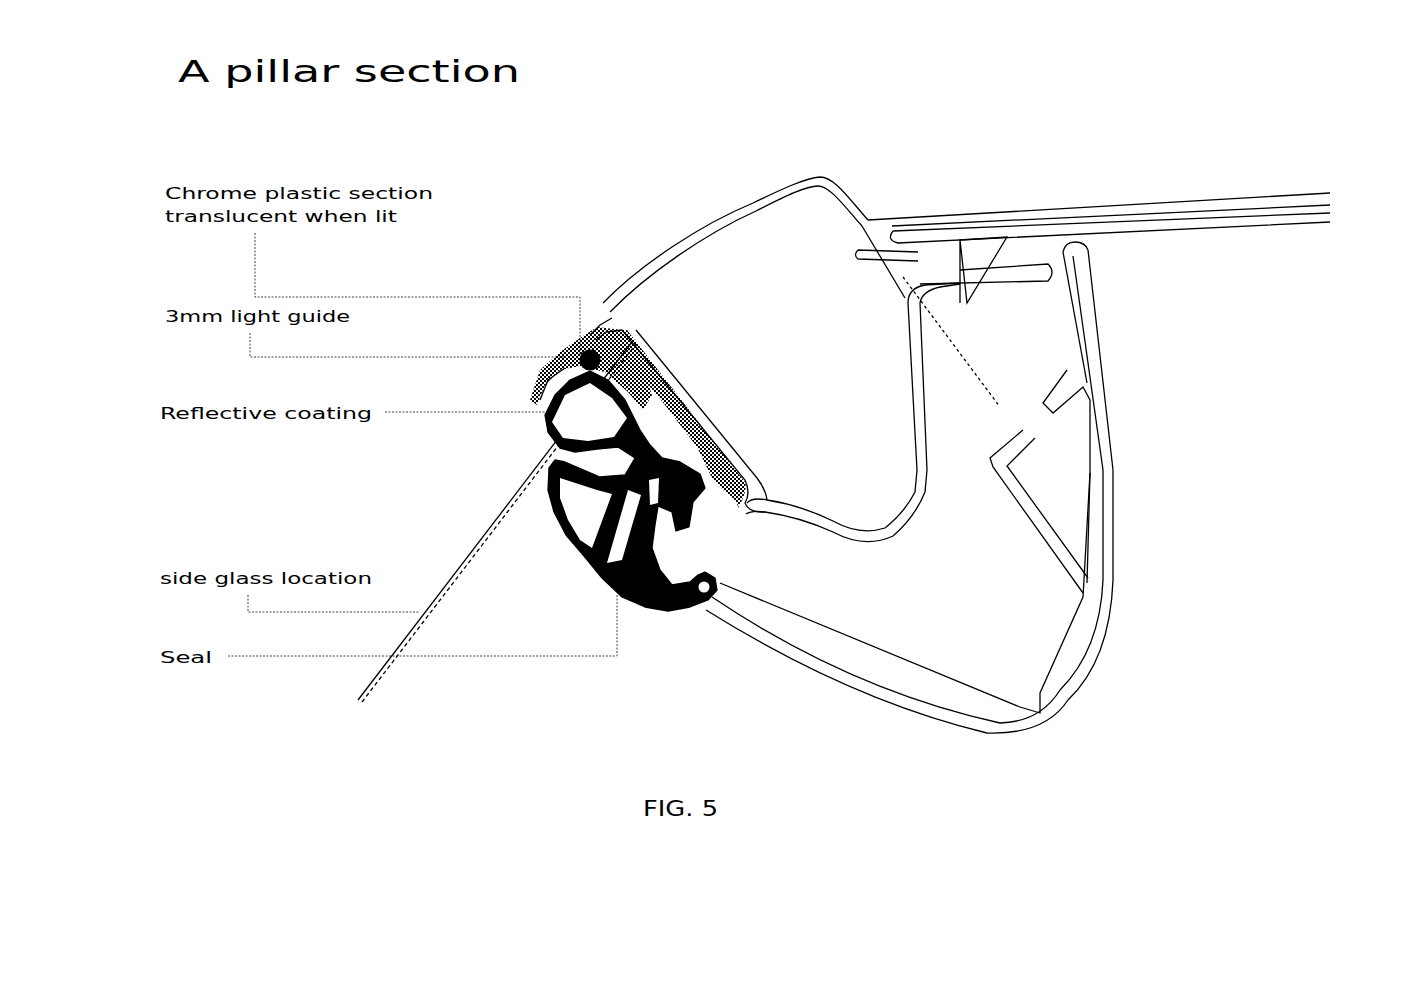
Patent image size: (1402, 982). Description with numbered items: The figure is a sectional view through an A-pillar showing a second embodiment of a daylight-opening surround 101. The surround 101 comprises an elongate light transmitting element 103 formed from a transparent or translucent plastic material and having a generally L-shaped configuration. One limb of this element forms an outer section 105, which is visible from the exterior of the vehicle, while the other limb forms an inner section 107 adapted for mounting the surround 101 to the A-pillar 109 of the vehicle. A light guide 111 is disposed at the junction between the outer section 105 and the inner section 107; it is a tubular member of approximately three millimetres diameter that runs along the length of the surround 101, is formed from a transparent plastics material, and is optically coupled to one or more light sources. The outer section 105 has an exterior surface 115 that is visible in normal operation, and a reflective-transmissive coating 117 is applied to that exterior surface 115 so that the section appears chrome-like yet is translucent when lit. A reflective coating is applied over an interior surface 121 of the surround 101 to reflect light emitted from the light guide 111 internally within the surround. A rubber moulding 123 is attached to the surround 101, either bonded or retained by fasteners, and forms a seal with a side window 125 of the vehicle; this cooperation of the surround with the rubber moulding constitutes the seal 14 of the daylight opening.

The A-pillar 109 is at (693, 193).
The exterior surface 115 is at (590, 333).
The DLO surround 101 is at (648, 380).
The light transmitting element 103 is at (598, 338).
The reflective-transmissive coating 117 is at (565, 354).
The light guide 111 is at (600, 360).
The inner section 107 is at (668, 412).
The interior surface 121 is at (705, 445).
The outer section 105 is at (553, 378).
The side window 125 is at (478, 543).
The rubber moulding 123 is at (620, 590).
The seal 14 is at (733, 512).